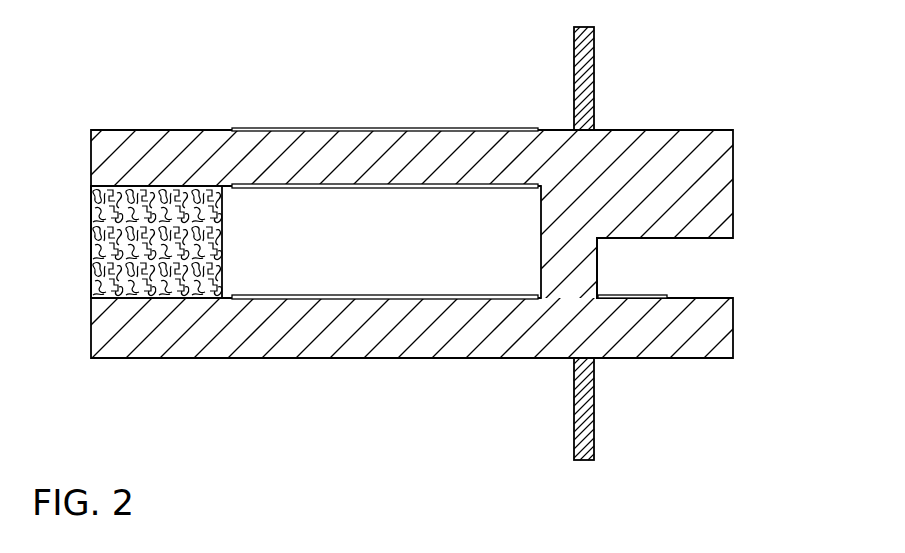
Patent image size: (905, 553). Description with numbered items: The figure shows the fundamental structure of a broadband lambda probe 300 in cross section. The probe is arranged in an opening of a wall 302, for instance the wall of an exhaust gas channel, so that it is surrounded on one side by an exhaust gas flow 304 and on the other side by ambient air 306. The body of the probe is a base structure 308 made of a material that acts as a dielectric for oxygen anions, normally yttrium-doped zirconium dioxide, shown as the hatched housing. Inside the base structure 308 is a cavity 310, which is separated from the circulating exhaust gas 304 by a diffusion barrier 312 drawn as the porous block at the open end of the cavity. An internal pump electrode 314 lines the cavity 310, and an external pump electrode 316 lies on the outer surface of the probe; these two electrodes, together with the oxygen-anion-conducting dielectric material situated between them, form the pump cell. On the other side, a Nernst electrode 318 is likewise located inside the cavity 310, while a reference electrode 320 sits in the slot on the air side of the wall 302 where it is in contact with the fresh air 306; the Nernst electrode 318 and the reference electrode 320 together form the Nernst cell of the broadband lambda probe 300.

The broadband lambda probe 300 is at (315, 85).
The wall 302 is at (588, 77).
The exhaust gas flow 304 is at (348, 188).
The ambient air 306 is at (697, 267).
The base structure 308 is at (281, 349).
The cavity 310 is at (445, 280).
The diffusion barrier 312 is at (180, 286).
The internal pump electrode 314 is at (454, 185).
The external pump electrode 316 is at (483, 128).
The Nernst electrode 318 is at (384, 297).
The reference electrode 320 is at (634, 296).